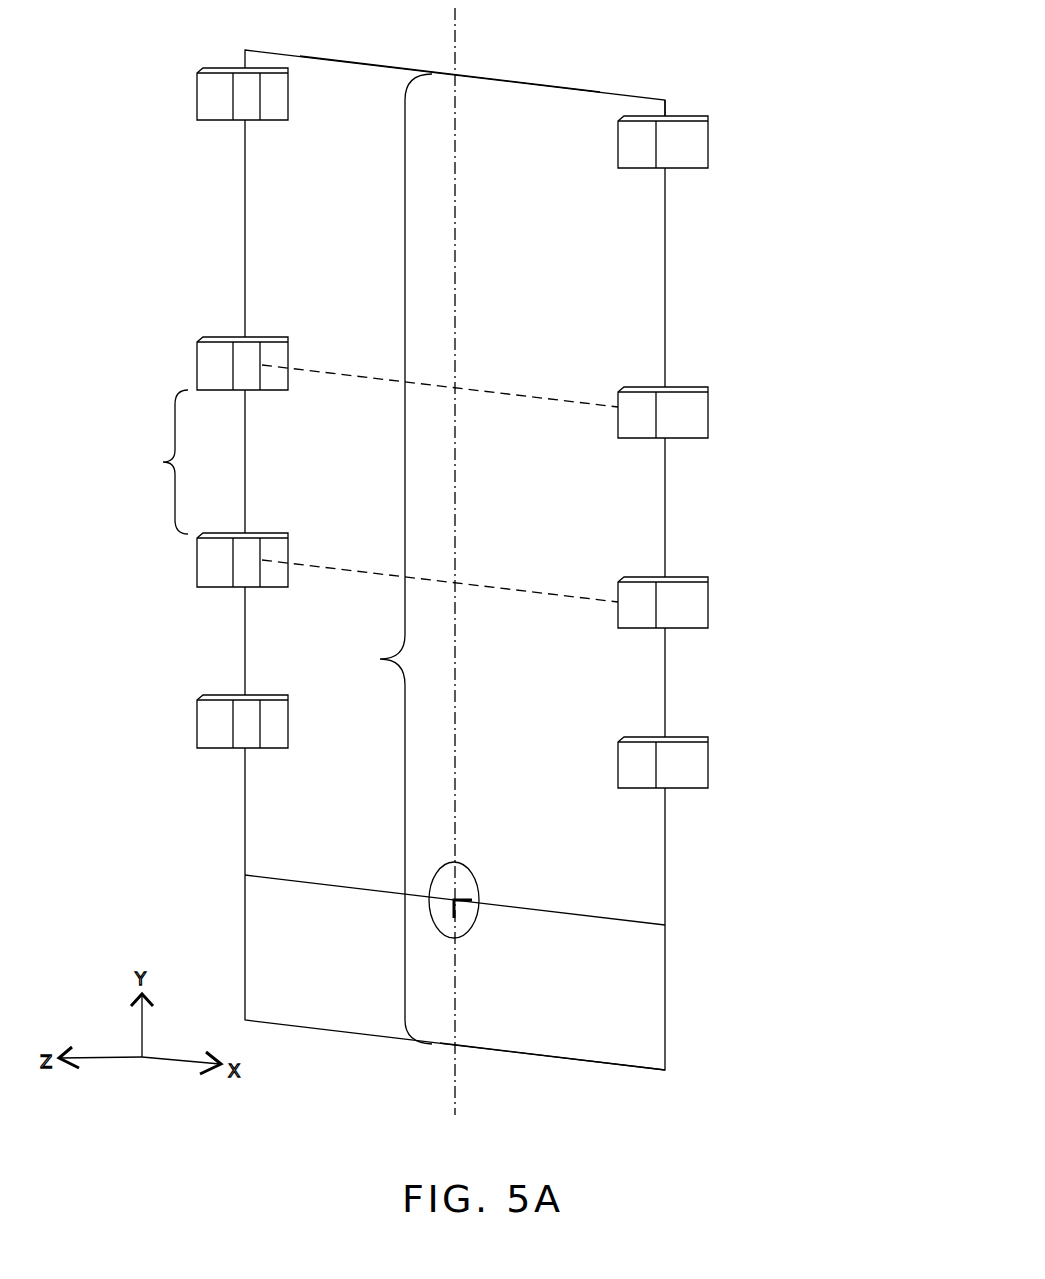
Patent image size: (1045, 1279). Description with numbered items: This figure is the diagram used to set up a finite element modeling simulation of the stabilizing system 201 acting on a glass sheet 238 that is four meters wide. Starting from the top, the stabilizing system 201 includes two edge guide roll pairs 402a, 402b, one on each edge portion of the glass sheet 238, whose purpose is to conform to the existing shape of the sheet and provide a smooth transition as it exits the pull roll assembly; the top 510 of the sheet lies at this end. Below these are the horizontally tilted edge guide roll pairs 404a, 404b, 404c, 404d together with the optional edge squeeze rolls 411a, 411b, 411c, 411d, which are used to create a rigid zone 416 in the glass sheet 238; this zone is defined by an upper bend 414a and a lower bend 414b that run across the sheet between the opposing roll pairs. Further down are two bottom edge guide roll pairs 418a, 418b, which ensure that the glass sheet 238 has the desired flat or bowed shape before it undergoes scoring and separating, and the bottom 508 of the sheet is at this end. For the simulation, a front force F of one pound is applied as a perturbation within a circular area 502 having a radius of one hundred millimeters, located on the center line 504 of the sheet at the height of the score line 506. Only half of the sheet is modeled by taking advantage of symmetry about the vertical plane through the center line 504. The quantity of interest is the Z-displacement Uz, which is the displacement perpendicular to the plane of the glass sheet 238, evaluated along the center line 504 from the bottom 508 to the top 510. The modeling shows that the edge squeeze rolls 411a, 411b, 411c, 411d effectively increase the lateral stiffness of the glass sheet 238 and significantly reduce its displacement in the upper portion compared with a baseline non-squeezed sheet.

The stabilizing system 201 is at (862, 113).
The glass sheet 238 is at (527, 97).
The edge guide roll pair 402a is at (196, 93).
The edge guide roll pair 402b is at (710, 150).
The horizontally tilted edge guide roll pair 404a is at (170, 363).
The horizontally tilted edge guide roll pair 404b is at (734, 412).
The horizontally tilted edge guide roll pair 404c is at (170, 560).
The horizontally tilted edge guide roll pair 404d is at (734, 603).
The edge squeeze roll 411a is at (196, 364).
The edge squeeze roll 411b is at (710, 416).
The edge squeeze roll 411c is at (196, 561).
The edge squeeze roll 411d is at (710, 612).
The bend 414a is at (500, 393).
The bend 414b is at (500, 590).
The rigid zone 416 is at (155, 462).
The bottom edge guide roll pair 418a is at (196, 724).
The bottom edge guide roll pair 418b is at (710, 776).
The circular area 502 is at (468, 890).
The center line 504 is at (455, 41).
The score line 506 is at (625, 918).
The bottom 508 is at (525, 1058).
The top 510 is at (650, 96).
The front force F is at (462, 906).
The Z-displacement Uz is at (385, 559).